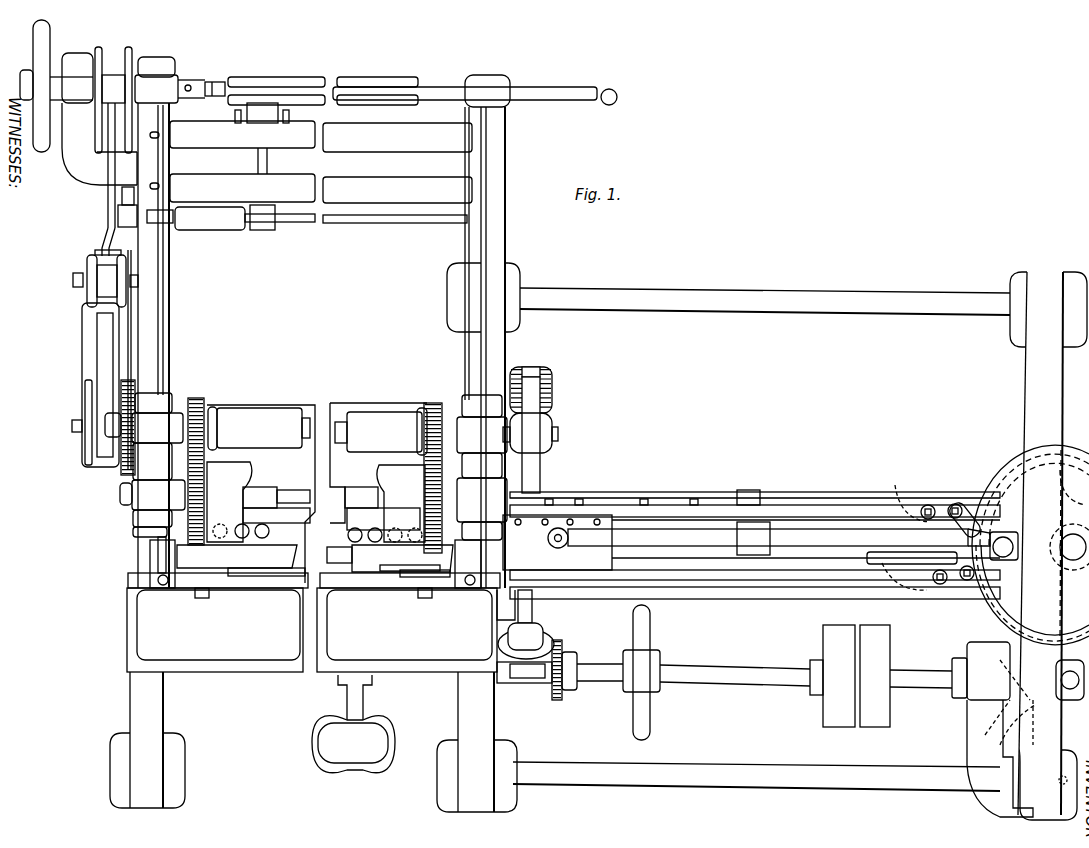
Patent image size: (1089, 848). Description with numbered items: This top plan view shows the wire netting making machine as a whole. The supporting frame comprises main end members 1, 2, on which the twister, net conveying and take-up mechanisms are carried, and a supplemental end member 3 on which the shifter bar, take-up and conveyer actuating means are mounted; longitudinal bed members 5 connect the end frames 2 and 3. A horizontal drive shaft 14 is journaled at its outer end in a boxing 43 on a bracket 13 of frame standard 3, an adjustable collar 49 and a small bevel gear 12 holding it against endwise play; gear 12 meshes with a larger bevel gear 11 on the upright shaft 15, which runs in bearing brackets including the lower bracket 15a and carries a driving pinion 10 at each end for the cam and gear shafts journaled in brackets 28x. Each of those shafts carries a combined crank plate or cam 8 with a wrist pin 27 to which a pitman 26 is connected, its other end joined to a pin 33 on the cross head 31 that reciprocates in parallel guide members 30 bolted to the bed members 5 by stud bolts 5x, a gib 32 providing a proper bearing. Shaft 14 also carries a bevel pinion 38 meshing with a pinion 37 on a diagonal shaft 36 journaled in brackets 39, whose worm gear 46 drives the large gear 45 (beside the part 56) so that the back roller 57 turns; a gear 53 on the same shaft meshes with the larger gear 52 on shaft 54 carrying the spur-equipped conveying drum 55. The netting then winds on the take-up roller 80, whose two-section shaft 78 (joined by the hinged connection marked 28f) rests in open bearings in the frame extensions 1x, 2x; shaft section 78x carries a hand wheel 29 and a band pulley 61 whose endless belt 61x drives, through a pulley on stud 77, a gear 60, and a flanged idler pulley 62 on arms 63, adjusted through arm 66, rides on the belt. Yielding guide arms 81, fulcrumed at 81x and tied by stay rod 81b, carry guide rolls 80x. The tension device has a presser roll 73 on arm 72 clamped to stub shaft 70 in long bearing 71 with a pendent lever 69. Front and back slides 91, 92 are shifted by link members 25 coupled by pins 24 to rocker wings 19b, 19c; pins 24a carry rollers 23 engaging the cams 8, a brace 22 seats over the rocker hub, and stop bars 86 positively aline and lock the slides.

The main end member 1 is at (206, 455).
The frame portion extension 1x is at (172, 82).
The main end member 2 is at (414, 700).
The frame portion extension 2x is at (505, 80).
The supplemental end member 3 is at (1048, 546).
The longitudinal bed member 5 is at (856, 512).
The stud bolt 5x is at (574, 518).
The cam member 8 is at (1039, 545).
The driving pinion 10 is at (1009, 736).
The larger bevel gear 11 is at (1036, 723).
The small bevel gear 12 is at (1004, 697).
The bracket 13 is at (967, 740).
The drive shaft 14 is at (733, 676).
The upright drive shaft 15 is at (1056, 672).
The bearing bracket 15a is at (1063, 782).
The wing 19b is at (905, 500).
The third wing 19c is at (992, 478).
The brace 22 is at (900, 565).
The roller 23 is at (968, 508).
The coupling pin 24 is at (928, 505).
The coupling pin 24a is at (955, 503).
The link member 25 is at (816, 520).
The pitman 26 is at (674, 540).
The crank pin 27 is at (1003, 560).
The coupling 28f is at (210, 84).
The bracket 28x is at (1034, 499).
The hand wheel 29 is at (38, 54).
The guide member 30 is at (676, 496).
The cross head 31 is at (557, 542).
The gib 32 is at (706, 505).
The pin 33 is at (561, 532).
The diagonal shaft 36 is at (534, 611).
The bevel pinion 37 is at (556, 642).
The bevel pinion 38 is at (560, 693).
The bearing bracket 39 is at (525, 685).
The boxing 43 is at (988, 671).
The large gear 45 is at (541, 424).
The worm gear 46 is at (550, 390).
The adjustable collar 49 is at (952, 670).
The larger gear 52 is at (185, 530).
The gear 53 is at (198, 400).
The shaft 54 is at (331, 508).
The conveying drum 55 is at (316, 502).
The hub 56 is at (558, 434).
The back roller 57 is at (317, 493).
The gear 60 is at (125, 470).
The band pulley 61 is at (98, 116).
The endless belt 61x is at (112, 62).
The flanged idler pulley 62 is at (100, 282).
The arm 63 is at (84, 336).
The arm 66 is at (79, 278).
The pendent lever arm 69 is at (118, 200).
The stub shaft 70 is at (288, 222).
The long bearing 71 is at (225, 226).
The arm 72 is at (267, 163).
The presser roll 73 is at (262, 113).
The stud 77 is at (75, 430).
The take-up roll shaft 78 is at (441, 90).
The shaft section 78x is at (78, 50).
The take-up roller 80 is at (370, 80).
The guide roll 80x is at (397, 163).
The side arm 81 is at (481, 341).
The stay rod 81b is at (395, 223).
The fulcrum end 81x is at (166, 398).
The stop bar 86 is at (165, 556).
The front slide 91 is at (315, 561).
The back slide 92 is at (288, 505).